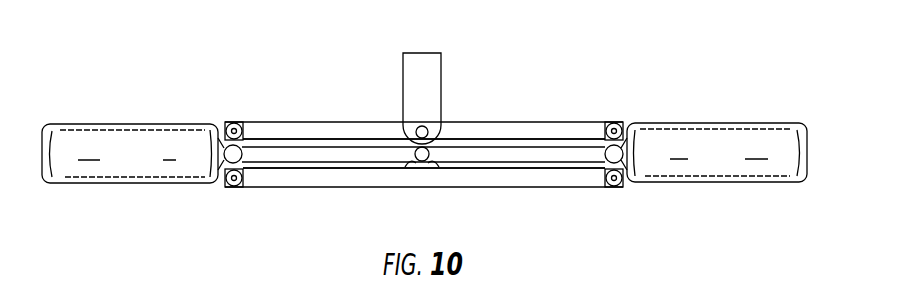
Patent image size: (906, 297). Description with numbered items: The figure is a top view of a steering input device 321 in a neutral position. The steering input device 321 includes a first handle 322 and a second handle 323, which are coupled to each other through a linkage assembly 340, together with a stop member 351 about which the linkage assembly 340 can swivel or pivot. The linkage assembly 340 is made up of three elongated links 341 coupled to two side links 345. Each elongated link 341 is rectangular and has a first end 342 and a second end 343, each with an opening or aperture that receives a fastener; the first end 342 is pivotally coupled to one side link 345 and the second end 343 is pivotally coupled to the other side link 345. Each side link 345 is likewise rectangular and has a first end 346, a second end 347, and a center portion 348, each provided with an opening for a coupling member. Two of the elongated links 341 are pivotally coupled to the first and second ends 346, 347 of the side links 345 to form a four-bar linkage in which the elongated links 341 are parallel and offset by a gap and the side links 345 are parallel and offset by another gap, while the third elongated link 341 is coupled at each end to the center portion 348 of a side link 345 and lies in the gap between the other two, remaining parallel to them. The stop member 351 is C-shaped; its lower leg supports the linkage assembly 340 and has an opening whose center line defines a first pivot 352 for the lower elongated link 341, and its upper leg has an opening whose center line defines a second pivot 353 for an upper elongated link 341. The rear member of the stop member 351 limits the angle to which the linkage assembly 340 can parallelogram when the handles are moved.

The steering input device 321 is at (96, 84).
The first handle 322 is at (778, 137).
The second handle 323 is at (62, 166).
The linkage assembly 340 is at (497, 104).
The elongated link 341 is at (536, 136).
The first end 342 is at (587, 152).
The second end 343 is at (252, 133).
The side link 345 is at (226, 149).
The first end 346 is at (231, 124).
The second end 347 is at (222, 177).
The center portion 348 is at (220, 152).
The stop member 351 is at (410, 78).
The first pivot 352 is at (423, 162).
The second pivot 353 is at (426, 128).